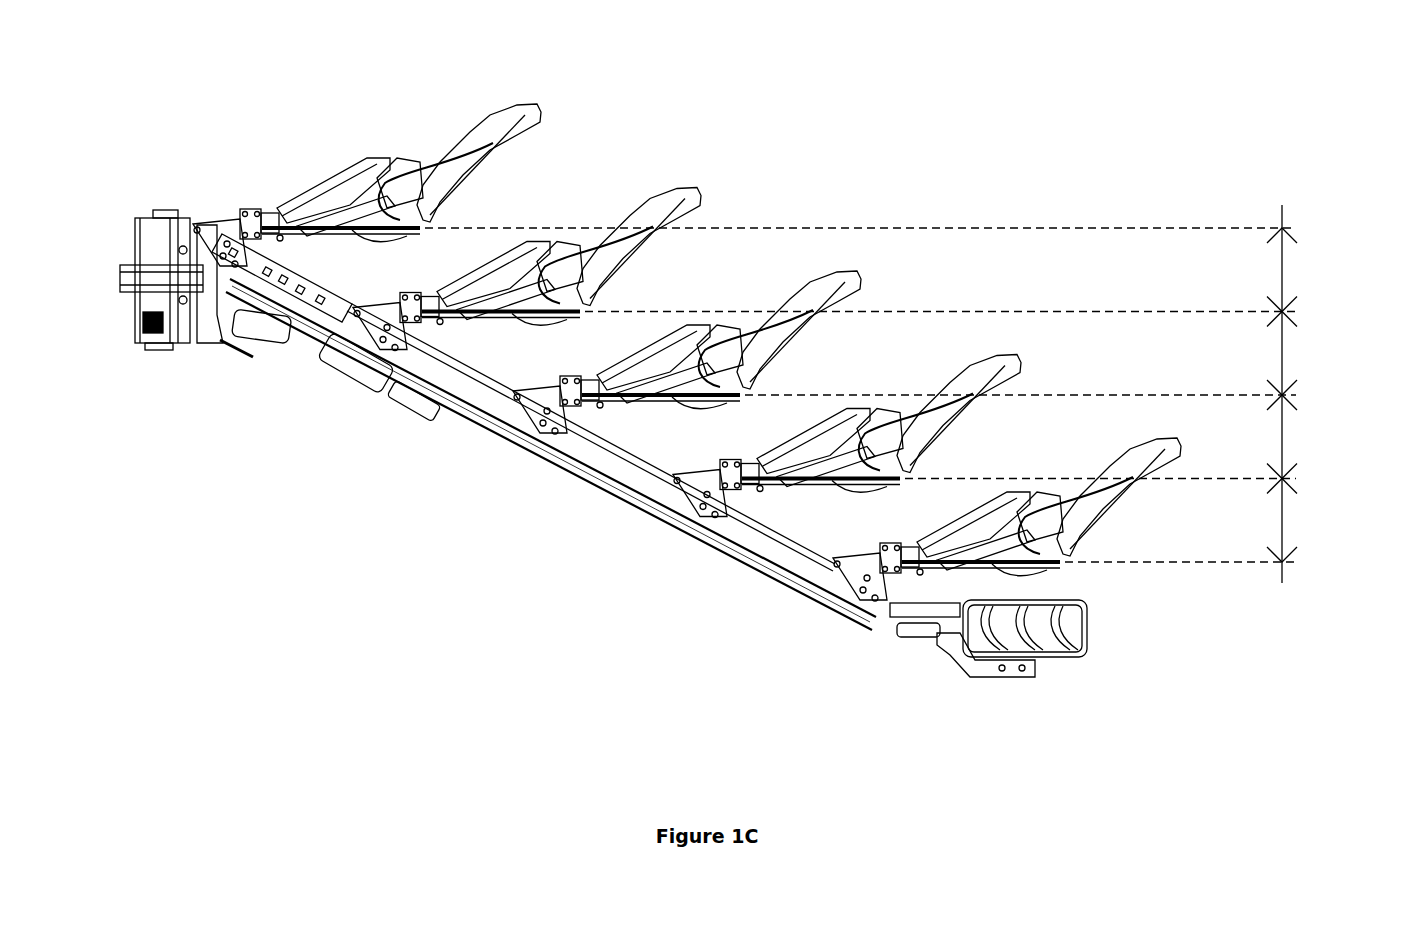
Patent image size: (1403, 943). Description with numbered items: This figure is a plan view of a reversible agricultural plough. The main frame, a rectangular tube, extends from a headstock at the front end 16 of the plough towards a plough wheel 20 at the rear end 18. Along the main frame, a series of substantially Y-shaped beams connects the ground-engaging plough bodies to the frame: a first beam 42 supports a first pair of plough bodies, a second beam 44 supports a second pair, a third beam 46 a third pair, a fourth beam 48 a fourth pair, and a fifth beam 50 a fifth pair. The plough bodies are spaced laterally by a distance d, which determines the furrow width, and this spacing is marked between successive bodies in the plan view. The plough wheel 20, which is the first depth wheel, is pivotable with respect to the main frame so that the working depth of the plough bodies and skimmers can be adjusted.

The front end 16 is at (149, 283).
The rear end 18 is at (908, 394).
The plough wheel 20 is at (1067, 647).
The first beam 42 is at (290, 220).
The second beam 44 is at (456, 300).
The third beam 46 is at (613, 393).
The fourth beam 48 is at (772, 475).
The fifth beam 50 is at (930, 560).